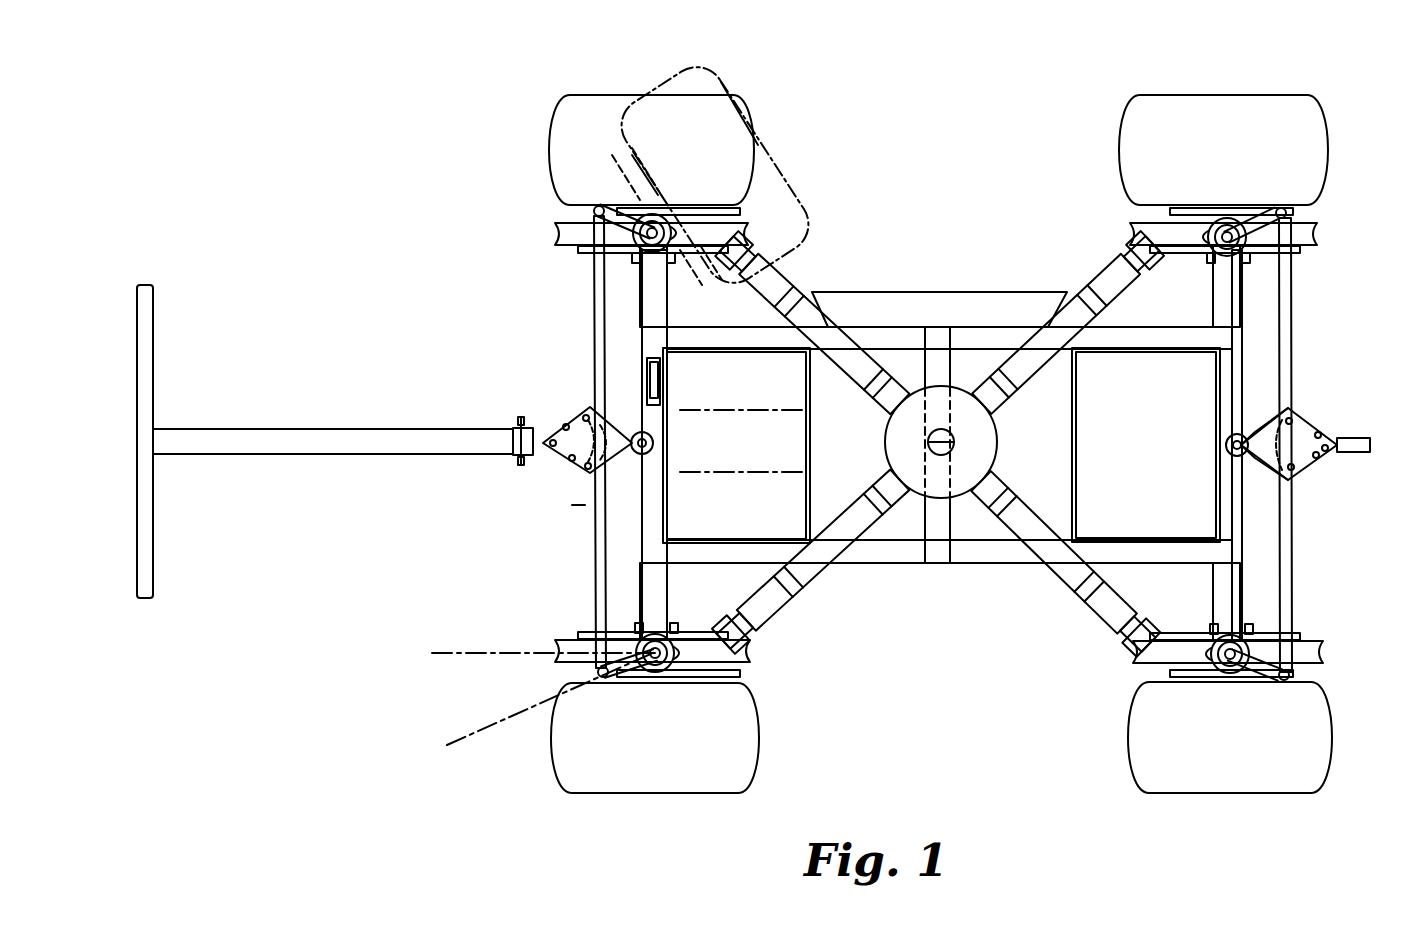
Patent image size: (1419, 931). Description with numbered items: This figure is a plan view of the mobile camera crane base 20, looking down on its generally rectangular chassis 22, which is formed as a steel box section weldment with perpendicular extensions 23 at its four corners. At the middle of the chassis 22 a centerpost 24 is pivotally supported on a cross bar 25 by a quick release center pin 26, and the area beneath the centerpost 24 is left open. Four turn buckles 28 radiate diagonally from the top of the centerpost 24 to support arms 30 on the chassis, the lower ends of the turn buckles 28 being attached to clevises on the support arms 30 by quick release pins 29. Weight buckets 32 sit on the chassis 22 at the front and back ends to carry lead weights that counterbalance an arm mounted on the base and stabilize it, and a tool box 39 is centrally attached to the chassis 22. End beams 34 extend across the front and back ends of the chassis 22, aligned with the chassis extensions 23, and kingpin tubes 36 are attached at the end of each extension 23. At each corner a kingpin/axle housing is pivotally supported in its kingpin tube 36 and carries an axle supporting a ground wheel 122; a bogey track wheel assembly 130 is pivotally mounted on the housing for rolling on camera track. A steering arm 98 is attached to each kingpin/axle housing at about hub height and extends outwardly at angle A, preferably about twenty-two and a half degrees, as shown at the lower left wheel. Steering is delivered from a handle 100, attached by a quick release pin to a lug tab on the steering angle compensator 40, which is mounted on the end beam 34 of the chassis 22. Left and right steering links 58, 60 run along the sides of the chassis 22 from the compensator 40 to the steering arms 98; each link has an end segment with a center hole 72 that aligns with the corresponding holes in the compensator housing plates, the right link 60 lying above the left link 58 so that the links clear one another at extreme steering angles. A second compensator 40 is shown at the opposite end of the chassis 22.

The mobile camera crane base 20 is at (966, 118).
The chassis 22 is at (975, 342).
The perpendicular extensions 23 is at (1222, 593).
The centerpost 24 is at (985, 447).
The cross bar 25 is at (945, 518).
The quick release center pin 26 is at (928, 442).
The turn buckles 28 is at (805, 578).
The quick release pins 29 is at (800, 208).
The support arms 30 is at (765, 632).
The weight buckets 32 is at (732, 505).
The end beams 34 is at (652, 510).
The kingpin tubes 36 is at (657, 625).
The tool box 39 is at (928, 312).
The steering angle compensator 40 is at (580, 428).
The left steering link 58 is at (592, 295).
The right steering link 60 is at (590, 507).
The center hole 72 is at (605, 440).
The steering arm 98 is at (1255, 222).
The handle 100 is at (331, 437).
The wheel 122 is at (1328, 140).
The bogey track wheel assembly 130 is at (535, 236).
The angle A is at (443, 658).